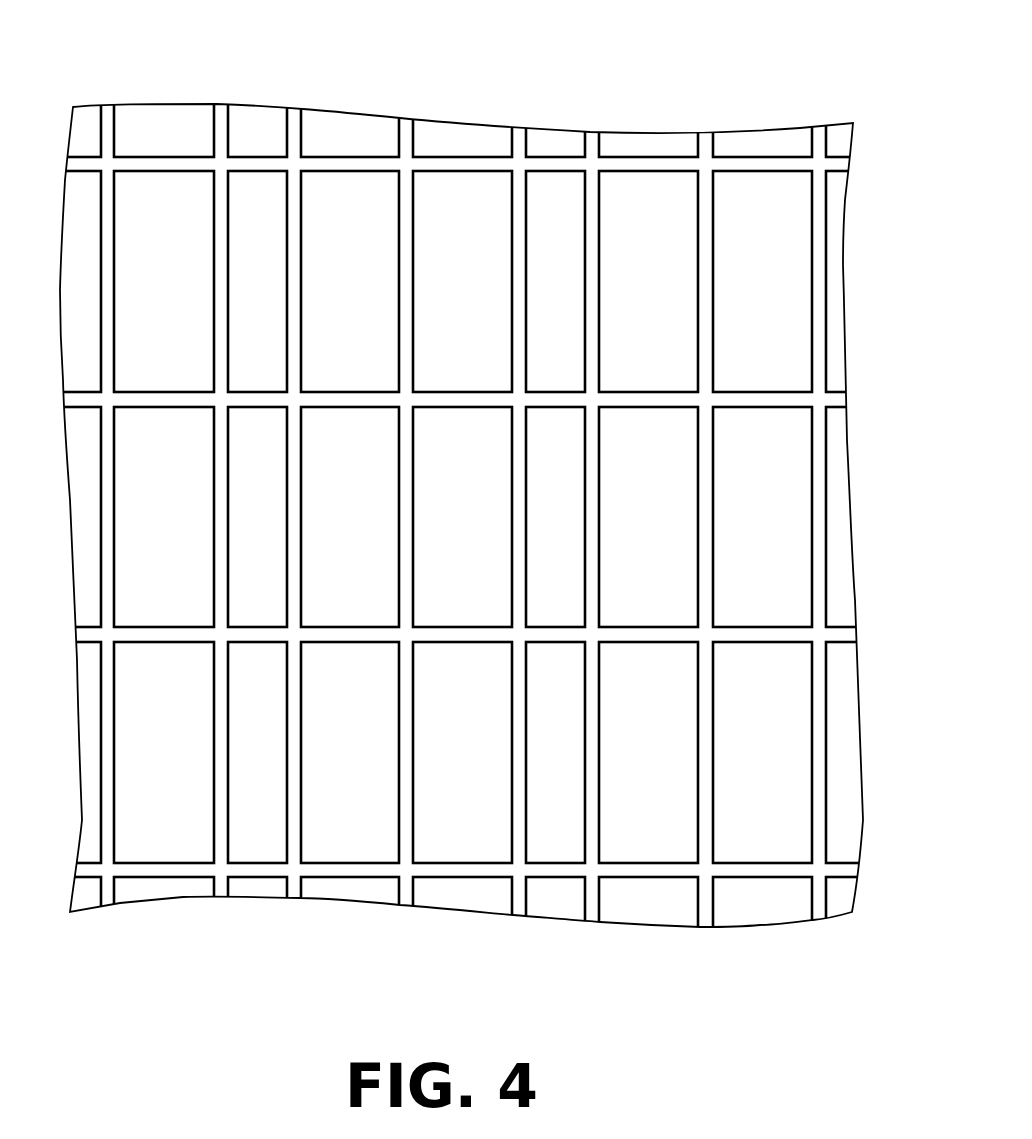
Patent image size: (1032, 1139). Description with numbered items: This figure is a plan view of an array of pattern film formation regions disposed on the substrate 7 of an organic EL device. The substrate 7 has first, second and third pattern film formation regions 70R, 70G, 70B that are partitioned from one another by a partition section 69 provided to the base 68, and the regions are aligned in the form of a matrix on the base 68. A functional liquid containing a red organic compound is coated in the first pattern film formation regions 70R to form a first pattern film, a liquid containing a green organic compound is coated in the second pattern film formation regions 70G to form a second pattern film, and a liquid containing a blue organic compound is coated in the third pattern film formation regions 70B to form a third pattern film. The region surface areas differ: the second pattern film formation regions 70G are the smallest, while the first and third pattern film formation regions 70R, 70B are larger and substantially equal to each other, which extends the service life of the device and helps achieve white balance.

The substrate 7 is at (483, 475).
The base 68 is at (843, 266).
The partition section 69 is at (593, 182).
The first pattern film formation region 70R is at (463, 517).
The second pattern film formation region 70G is at (406, 517).
The third pattern film formation region 70B is at (499, 517).